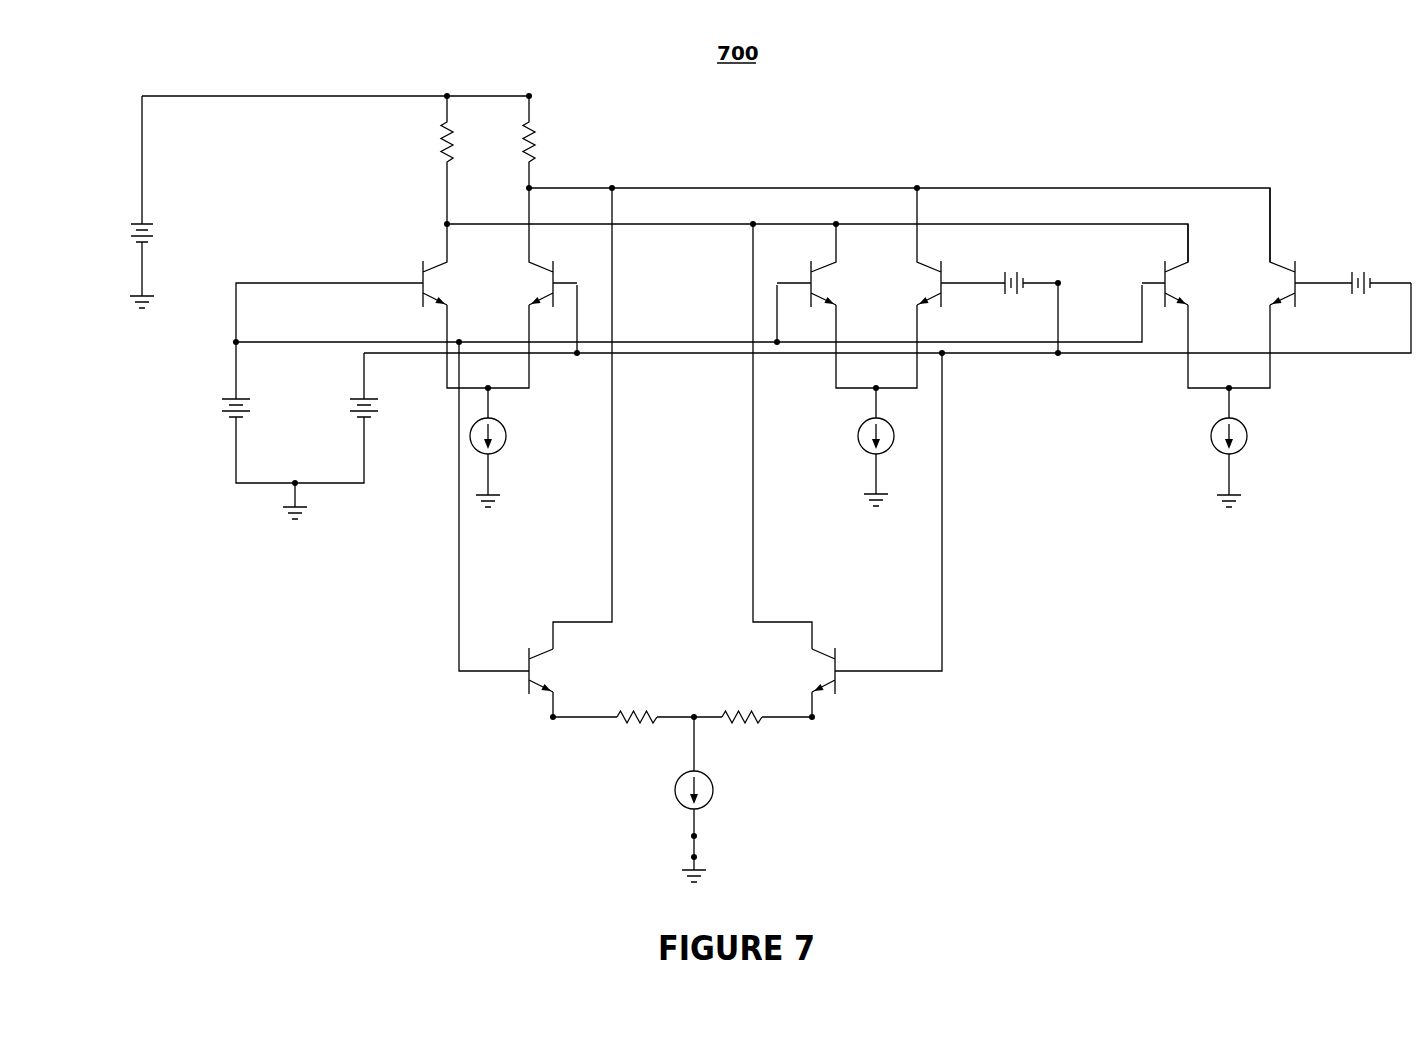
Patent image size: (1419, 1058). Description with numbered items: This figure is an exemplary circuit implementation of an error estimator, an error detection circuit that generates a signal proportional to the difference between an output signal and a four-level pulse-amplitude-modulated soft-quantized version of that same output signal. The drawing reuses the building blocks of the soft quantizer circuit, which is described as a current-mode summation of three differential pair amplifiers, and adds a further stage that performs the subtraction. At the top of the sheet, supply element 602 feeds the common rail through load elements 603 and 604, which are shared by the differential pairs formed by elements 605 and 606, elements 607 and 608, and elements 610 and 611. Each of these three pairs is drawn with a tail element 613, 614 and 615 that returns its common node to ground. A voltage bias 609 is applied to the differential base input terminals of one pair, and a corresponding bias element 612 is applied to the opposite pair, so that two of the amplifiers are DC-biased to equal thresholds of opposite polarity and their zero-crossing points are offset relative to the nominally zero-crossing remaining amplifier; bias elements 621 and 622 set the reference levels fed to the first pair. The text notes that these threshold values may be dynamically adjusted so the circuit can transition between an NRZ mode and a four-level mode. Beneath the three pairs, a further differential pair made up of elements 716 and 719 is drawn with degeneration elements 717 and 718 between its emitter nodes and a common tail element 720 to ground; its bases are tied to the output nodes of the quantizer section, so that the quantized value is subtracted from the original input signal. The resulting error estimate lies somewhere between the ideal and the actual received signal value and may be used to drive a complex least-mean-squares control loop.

The supply voltage source 602 is at (146, 222).
The resistor 603 is at (441, 138).
The resistor 604 is at (535, 140).
The transistor 605 is at (421, 265).
The transistor 606 is at (556, 265).
The transistor 607 is at (811, 265).
The transistor 608 is at (945, 265).
The voltage bias 609 is at (1040, 292).
The transistor 610 is at (1165, 265).
The transistor 611 is at (1298, 265).
The voltage source 612 is at (1361, 268).
The current source 613 is at (507, 440).
The current source 614 is at (858, 436).
The current source 615 is at (1211, 436).
The voltage source 621 is at (238, 395).
The voltage source 622 is at (370, 420).
The transistor 716 is at (528, 689).
The resistor 717 is at (637, 725).
The resistor 718 is at (752, 725).
The transistor 719 is at (838, 688).
The current source 720 is at (677, 803).